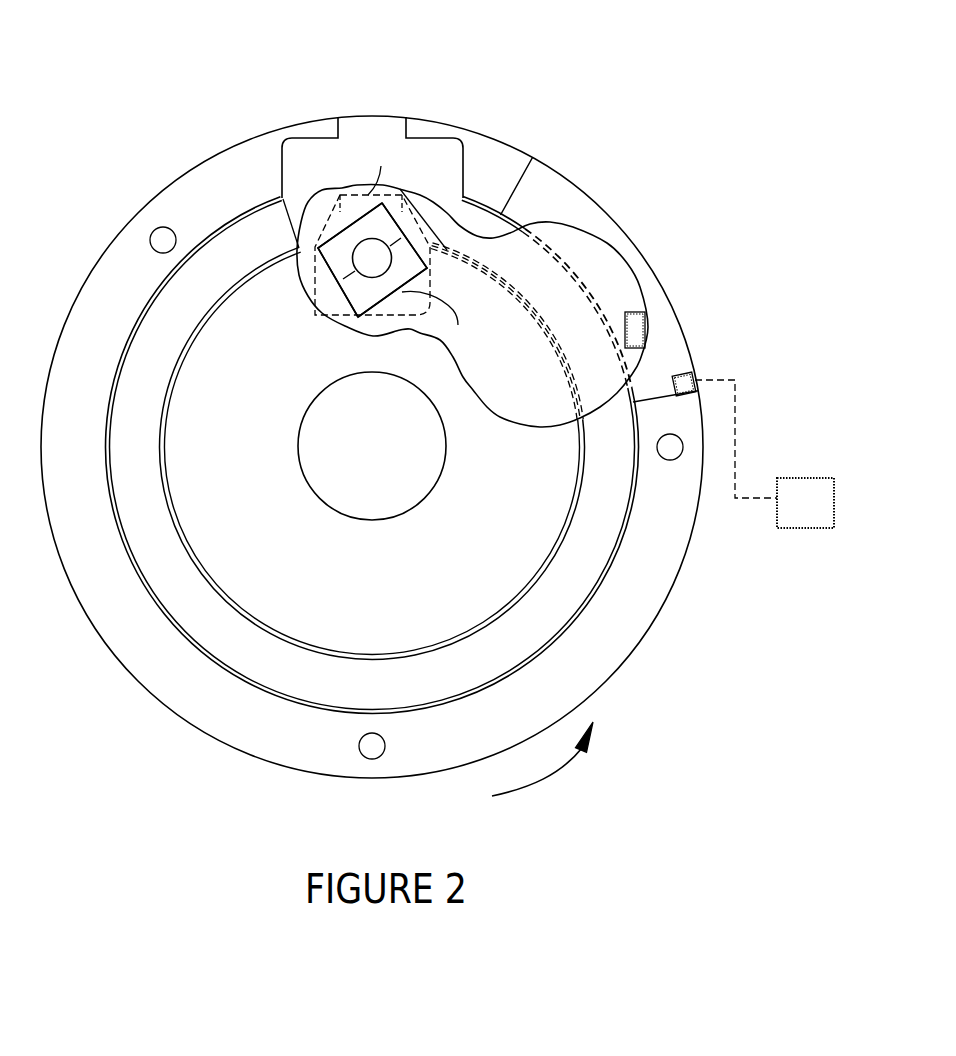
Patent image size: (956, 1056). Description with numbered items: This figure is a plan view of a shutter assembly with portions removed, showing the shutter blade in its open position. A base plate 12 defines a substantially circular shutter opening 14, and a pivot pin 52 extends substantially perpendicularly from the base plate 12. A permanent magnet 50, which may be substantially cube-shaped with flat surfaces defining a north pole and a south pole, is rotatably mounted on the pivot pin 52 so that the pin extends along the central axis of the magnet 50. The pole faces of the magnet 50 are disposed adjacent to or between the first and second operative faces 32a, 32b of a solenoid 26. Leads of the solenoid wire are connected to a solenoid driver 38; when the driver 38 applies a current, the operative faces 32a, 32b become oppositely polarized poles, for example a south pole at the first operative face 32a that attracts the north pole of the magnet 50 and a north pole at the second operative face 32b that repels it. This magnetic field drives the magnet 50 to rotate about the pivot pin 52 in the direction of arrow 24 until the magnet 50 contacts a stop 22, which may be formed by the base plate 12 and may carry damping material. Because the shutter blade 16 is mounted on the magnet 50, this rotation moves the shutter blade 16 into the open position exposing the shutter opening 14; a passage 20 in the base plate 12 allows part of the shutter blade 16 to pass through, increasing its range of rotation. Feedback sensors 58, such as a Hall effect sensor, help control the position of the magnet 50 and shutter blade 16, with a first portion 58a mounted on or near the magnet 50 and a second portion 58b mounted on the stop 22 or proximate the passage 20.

The base plate 12 is at (704, 462).
The shutter opening 14 is at (400, 443).
The shutter blade 16 is at (583, 226).
The passage 20 is at (660, 368).
The stop 22 is at (345, 310).
The arrow 24 is at (557, 775).
The solenoid 26 is at (335, 688).
The first operative face 32a is at (350, 193).
The second operative face 32b is at (391, 193).
The solenoid driver 38 is at (819, 513).
The magnet 50 is at (343, 243).
The pivot pin 52 is at (371, 250).
The feedback sensors 58 is at (686, 286).
The first portion of the Hall effect sensor 58a is at (637, 312).
The second portion of the Hall effect sensor 58b is at (693, 378).